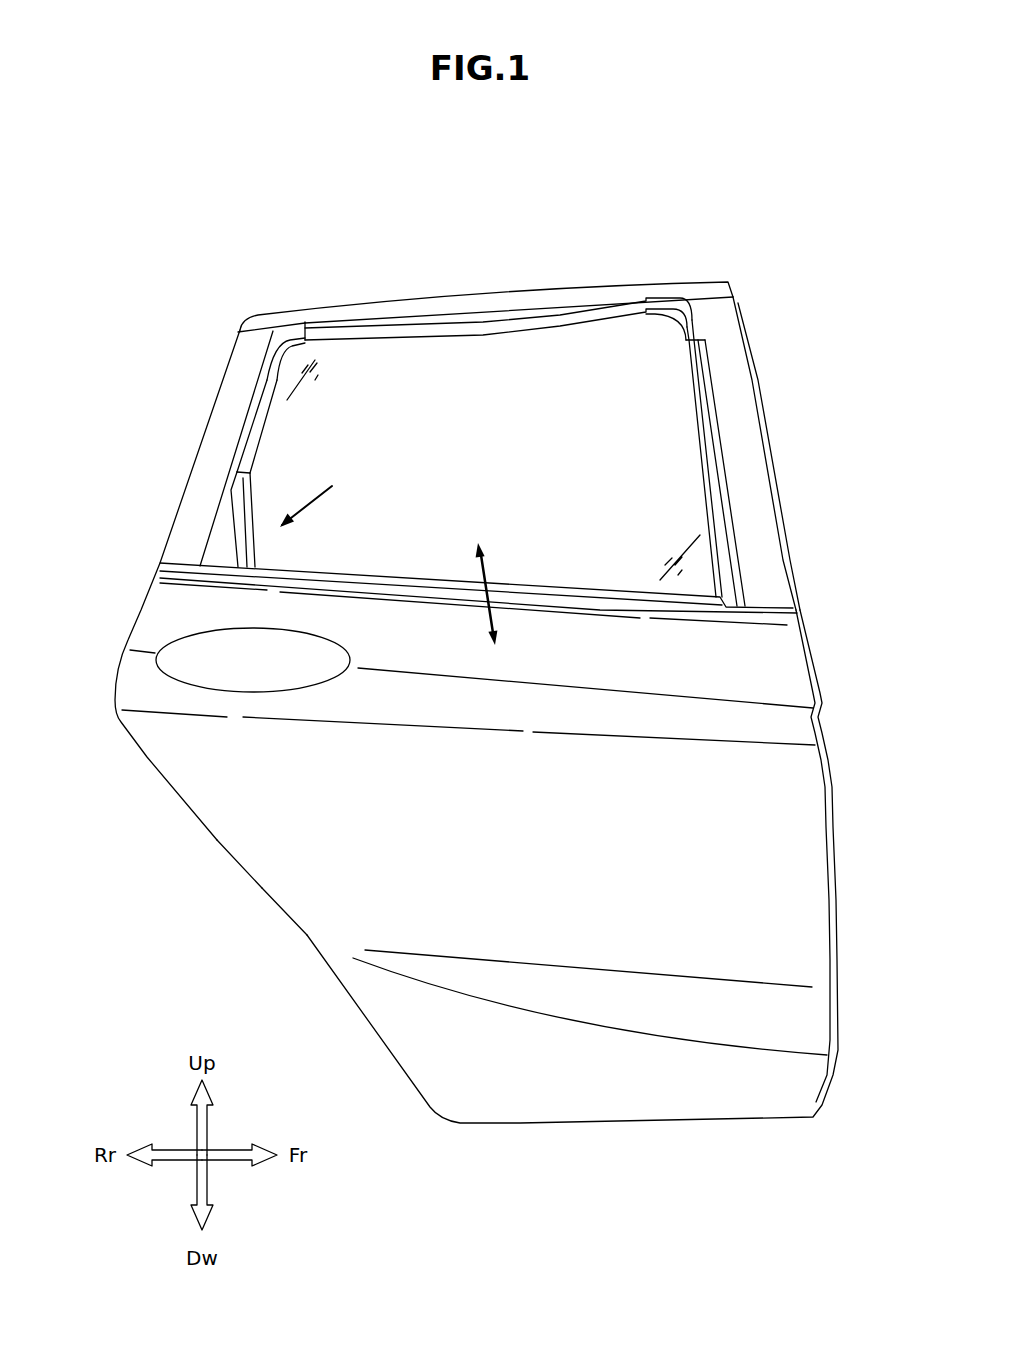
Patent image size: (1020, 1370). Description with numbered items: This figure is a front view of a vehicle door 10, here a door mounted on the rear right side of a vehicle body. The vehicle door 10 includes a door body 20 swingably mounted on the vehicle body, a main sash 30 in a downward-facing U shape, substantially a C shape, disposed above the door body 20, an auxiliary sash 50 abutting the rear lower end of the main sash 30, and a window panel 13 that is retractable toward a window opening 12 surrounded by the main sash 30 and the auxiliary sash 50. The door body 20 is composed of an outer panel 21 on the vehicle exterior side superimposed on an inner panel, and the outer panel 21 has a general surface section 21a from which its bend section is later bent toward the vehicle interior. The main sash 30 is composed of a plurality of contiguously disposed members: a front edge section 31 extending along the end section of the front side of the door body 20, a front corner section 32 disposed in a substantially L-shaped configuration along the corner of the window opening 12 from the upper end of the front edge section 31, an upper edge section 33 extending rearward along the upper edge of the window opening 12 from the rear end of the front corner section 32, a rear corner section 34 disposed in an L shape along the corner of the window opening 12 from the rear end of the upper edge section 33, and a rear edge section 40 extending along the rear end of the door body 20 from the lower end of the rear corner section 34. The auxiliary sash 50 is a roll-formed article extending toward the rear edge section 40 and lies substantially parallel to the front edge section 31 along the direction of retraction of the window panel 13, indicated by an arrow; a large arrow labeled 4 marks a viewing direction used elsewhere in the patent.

The vehicle door 10 is at (145, 283).
The door body 20 is at (137, 610).
The outer panel 21 is at (207, 830).
The general surface section 21a is at (334, 895).
The main sash 30 is at (800, 192).
The front edge section 31 is at (705, 382).
The front corner section 32 is at (698, 318).
The upper edge section 33 is at (518, 303).
The rear corner section 34 is at (292, 322).
The rear edge section 40 is at (253, 389).
The auxiliary sash 50 is at (232, 533).
The window opening 12 is at (465, 480).
The window panel 13 is at (675, 518).
The viewing direction arrow 4 is at (321, 492).